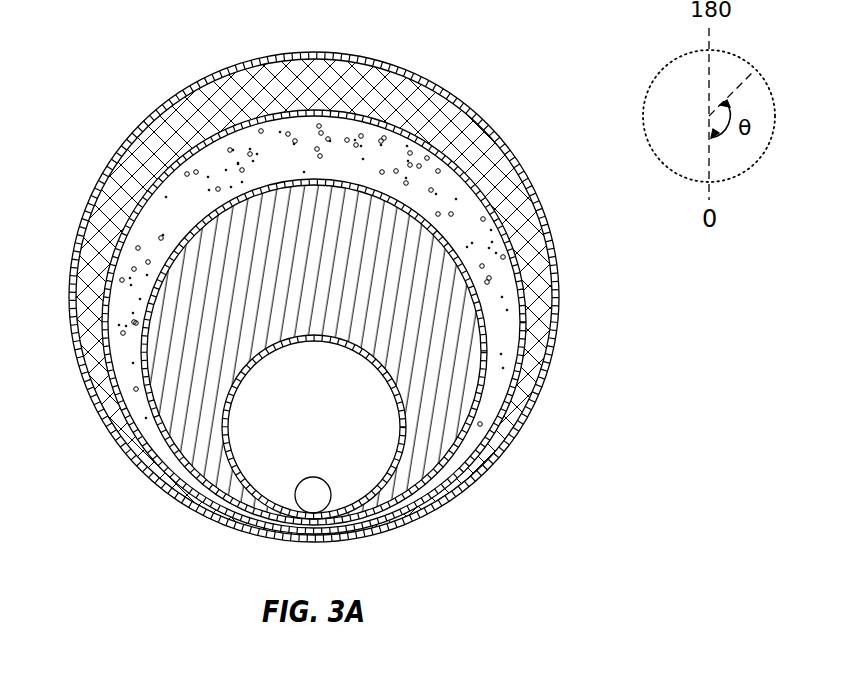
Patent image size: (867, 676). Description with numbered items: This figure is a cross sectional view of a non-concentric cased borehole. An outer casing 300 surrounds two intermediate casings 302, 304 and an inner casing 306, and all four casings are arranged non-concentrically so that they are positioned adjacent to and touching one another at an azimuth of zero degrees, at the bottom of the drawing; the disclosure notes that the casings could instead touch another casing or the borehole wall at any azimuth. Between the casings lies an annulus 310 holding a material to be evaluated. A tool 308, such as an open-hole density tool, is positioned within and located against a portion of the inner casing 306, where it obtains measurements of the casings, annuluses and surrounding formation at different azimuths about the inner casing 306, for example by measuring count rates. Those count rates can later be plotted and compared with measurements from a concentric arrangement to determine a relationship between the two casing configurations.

The outer casing 300 is at (413, 72).
The casing 302 is at (520, 372).
The casing 304 is at (148, 412).
The inner casing 306 is at (240, 468).
The tool 308 is at (318, 478).
The annulus 310 is at (375, 333).